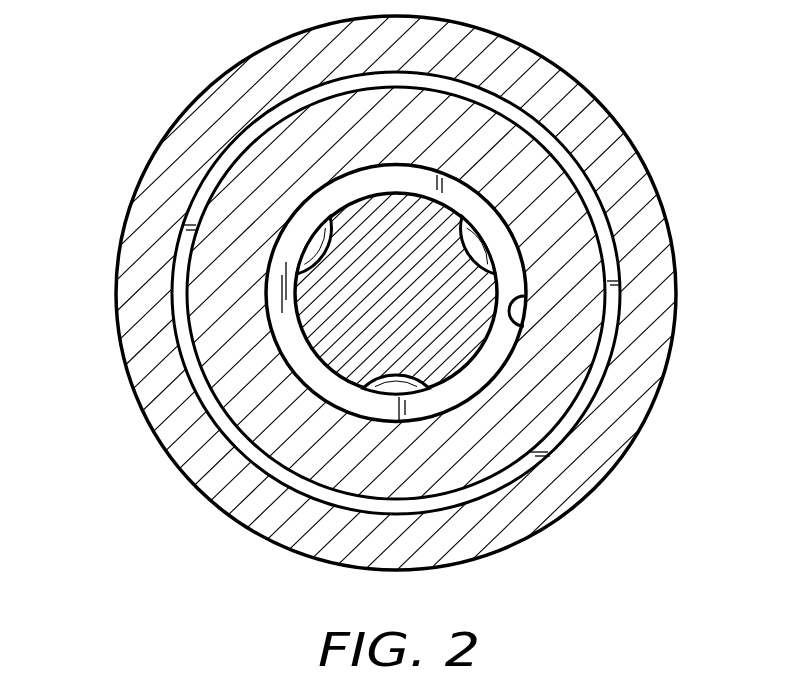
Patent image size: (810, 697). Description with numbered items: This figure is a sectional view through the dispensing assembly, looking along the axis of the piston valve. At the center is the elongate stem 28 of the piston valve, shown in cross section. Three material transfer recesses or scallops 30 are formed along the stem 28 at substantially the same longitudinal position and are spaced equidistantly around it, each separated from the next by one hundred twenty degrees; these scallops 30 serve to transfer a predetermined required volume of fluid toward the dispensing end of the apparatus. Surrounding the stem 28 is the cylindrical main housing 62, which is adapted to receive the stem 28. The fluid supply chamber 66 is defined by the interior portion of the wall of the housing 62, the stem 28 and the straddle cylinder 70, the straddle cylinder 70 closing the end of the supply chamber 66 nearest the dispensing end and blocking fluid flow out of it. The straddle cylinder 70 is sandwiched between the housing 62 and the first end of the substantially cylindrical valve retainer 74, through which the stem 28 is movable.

The elongate stem 28 is at (384, 300).
The material transfer recesses or scallops 30 is at (316, 247).
The cylindrical main housing 62 is at (595, 448).
The fluid supply chamber 66 is at (518, 312).
The straddle cylinder 70 is at (317, 380).
The valve retainer 74 is at (217, 305).